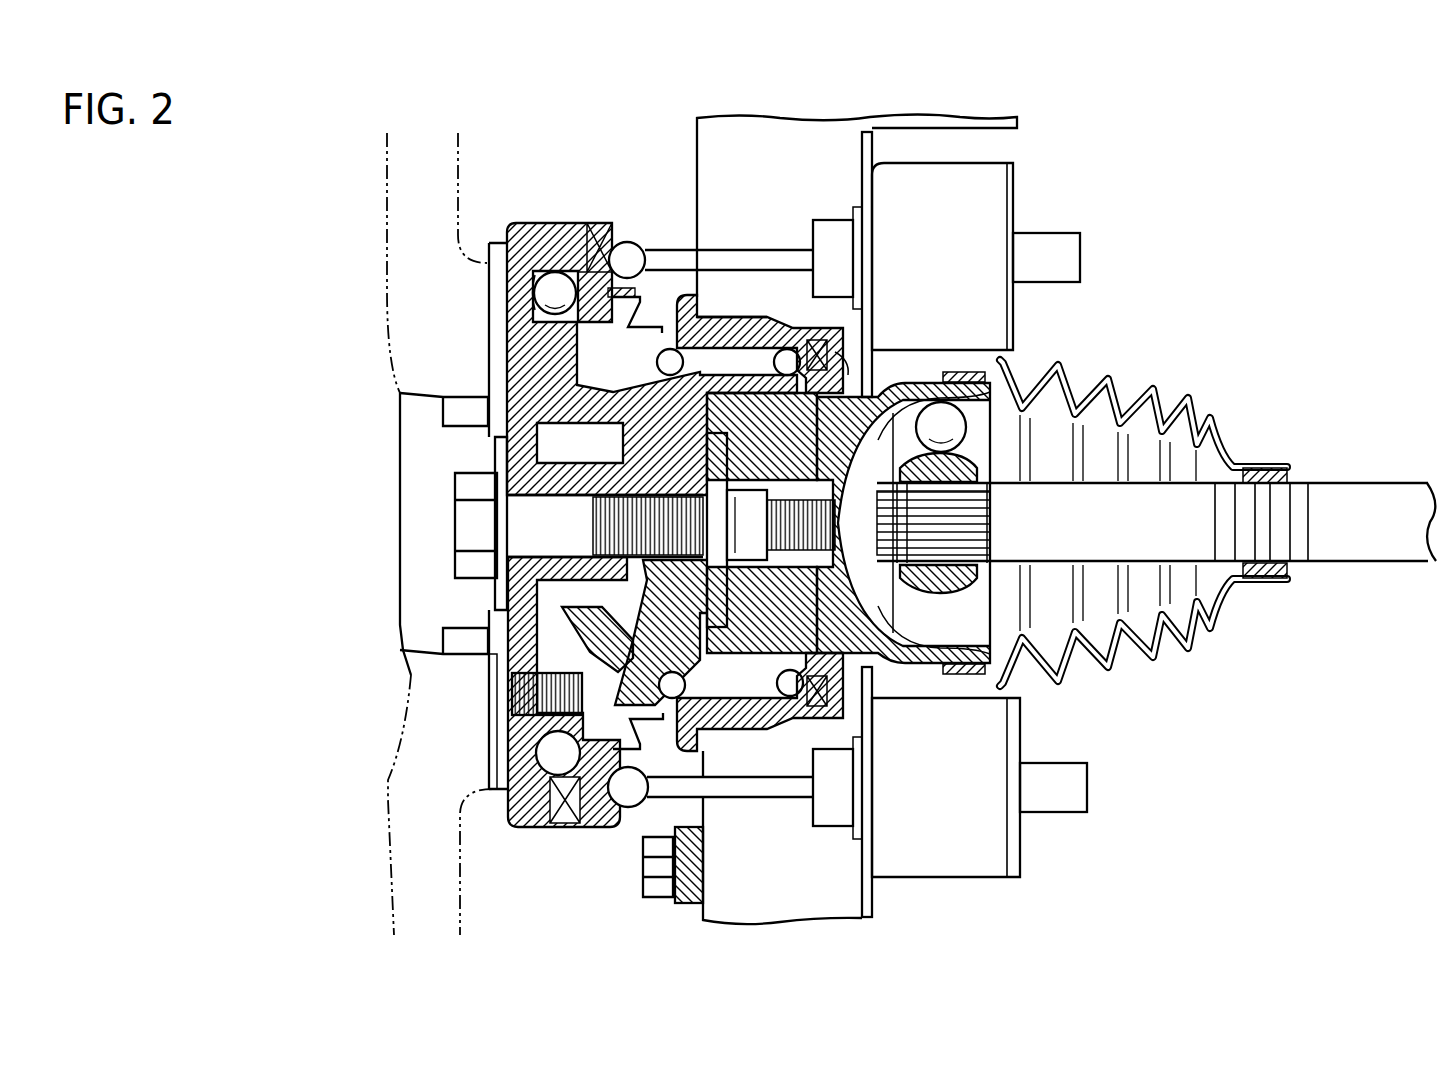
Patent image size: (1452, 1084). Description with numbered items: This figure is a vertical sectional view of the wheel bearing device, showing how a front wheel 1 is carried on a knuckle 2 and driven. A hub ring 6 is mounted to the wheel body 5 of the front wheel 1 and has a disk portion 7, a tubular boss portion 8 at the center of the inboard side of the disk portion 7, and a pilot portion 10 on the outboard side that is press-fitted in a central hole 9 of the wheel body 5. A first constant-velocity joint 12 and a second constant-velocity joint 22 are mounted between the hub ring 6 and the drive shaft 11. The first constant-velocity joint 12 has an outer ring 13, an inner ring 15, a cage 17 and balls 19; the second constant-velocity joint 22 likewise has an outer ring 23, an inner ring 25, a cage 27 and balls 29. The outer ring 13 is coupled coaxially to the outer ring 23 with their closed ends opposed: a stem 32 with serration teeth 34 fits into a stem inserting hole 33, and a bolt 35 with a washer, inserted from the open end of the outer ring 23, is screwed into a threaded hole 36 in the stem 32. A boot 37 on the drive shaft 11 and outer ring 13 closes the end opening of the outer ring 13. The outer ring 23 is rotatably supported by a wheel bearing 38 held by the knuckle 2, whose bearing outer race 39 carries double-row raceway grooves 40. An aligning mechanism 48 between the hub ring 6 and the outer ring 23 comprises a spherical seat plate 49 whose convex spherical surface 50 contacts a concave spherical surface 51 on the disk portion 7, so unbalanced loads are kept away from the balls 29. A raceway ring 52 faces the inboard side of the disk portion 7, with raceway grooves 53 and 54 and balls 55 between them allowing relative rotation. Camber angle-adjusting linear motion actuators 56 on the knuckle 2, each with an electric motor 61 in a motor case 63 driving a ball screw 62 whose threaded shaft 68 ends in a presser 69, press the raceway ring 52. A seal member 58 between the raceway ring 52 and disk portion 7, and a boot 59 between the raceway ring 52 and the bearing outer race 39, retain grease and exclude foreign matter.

The front wheel 1 is at (380, 158).
The knuckle 2 is at (730, 117).
The wheel body 5 is at (388, 212).
The hub ring 6 is at (498, 318).
The disk portion 7 is at (517, 354).
The tubular boss portion 8 is at (537, 498).
The central hole 9 is at (432, 641).
The pilot portion 10 is at (467, 432).
The drive shaft 11 is at (1347, 497).
The first constant-velocity joint 12 is at (928, 378).
The outer ring 13 is at (990, 378).
The inner ring 15 is at (973, 597).
The cage 17 is at (977, 430).
The balls 19 is at (933, 375).
The second constant-velocity joint 22 is at (731, 675).
The outer ring 23 is at (745, 645).
The inner ring 25 is at (657, 588).
The cage 27 is at (690, 620).
The balls 29 is at (680, 297).
The stem 32 is at (770, 480).
The stem inserting hole 33 is at (835, 513).
The serration teeth 34 is at (817, 560).
The bolt 35 is at (752, 540).
The threaded hole 36 is at (803, 540).
The boot 37 is at (1107, 390).
The wheel bearing 38 is at (736, 314).
The bearing outer race 39 is at (747, 320).
The raceway grooves 40 is at (790, 352).
The aligning mechanism 48 is at (550, 605).
The spherical seat plate 49 is at (489, 654).
The convex spherical surface 50 is at (537, 723).
The concave spherical surface 51 is at (540, 685).
The raceway ring 52 is at (602, 227).
The raceway groove 53 is at (553, 290).
The raceway groove 54 is at (533, 300).
The balls 55 is at (543, 290).
The camber angle-adjusting linear motion actuator 56 is at (1018, 172).
The seal member 58 is at (573, 233).
The boot 59 is at (627, 793).
The electric motor 61 is at (1018, 214).
The ball screw 62 is at (787, 244).
The motor case 63 is at (1003, 256).
The threaded shaft 68 is at (712, 258).
The presser 69 is at (628, 243).